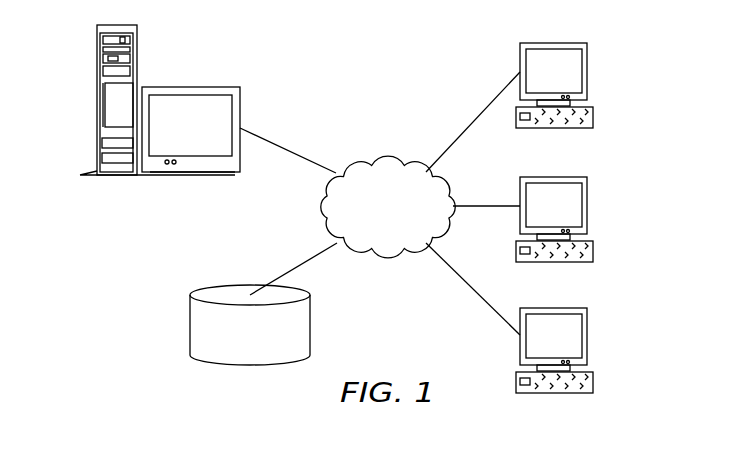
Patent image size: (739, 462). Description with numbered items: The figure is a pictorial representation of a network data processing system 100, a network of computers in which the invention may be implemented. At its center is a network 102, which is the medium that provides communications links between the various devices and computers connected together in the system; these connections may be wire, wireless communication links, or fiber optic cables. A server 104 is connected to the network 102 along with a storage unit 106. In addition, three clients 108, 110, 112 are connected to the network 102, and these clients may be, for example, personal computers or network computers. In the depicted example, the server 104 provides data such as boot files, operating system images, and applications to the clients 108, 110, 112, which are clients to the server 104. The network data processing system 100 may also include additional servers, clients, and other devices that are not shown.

The network data processing system 100 is at (452, 57).
The network 102 is at (360, 160).
The server 104 is at (97, 102).
The storage unit 106 is at (190, 327).
The client 108 is at (587, 70).
The client 110 is at (587, 195).
The client 112 is at (588, 337).